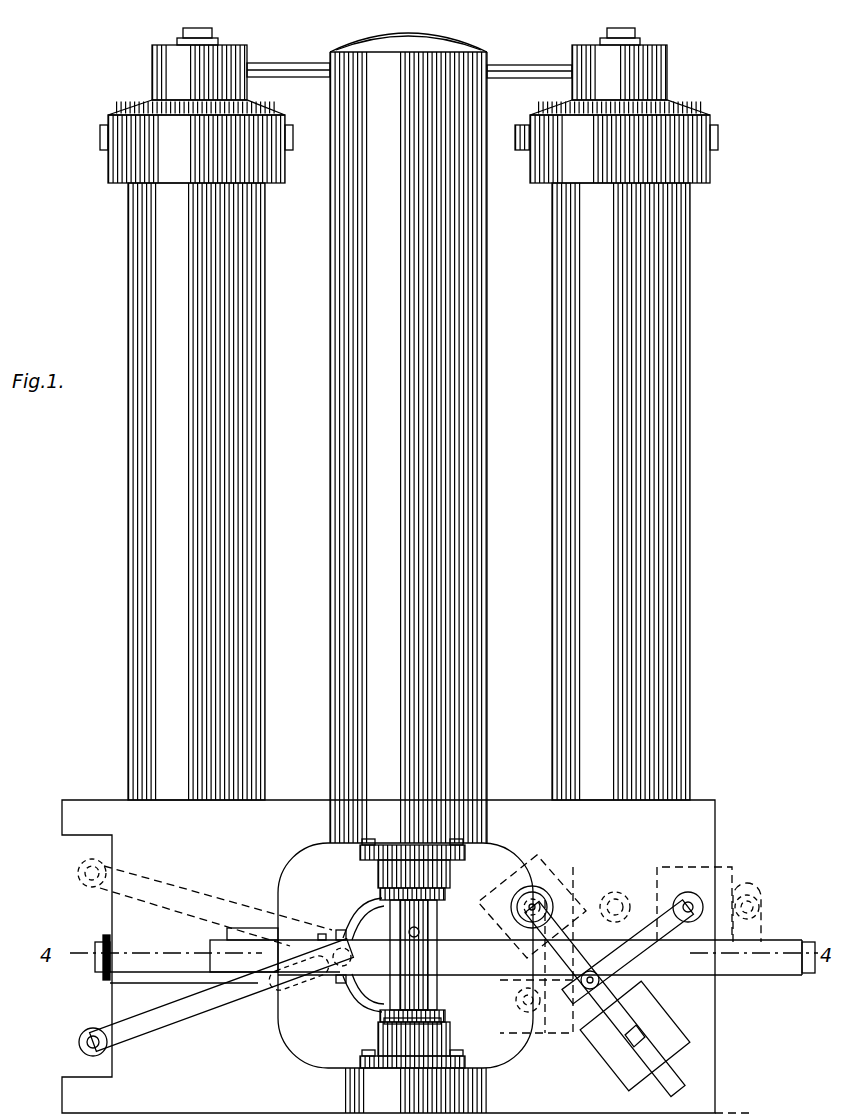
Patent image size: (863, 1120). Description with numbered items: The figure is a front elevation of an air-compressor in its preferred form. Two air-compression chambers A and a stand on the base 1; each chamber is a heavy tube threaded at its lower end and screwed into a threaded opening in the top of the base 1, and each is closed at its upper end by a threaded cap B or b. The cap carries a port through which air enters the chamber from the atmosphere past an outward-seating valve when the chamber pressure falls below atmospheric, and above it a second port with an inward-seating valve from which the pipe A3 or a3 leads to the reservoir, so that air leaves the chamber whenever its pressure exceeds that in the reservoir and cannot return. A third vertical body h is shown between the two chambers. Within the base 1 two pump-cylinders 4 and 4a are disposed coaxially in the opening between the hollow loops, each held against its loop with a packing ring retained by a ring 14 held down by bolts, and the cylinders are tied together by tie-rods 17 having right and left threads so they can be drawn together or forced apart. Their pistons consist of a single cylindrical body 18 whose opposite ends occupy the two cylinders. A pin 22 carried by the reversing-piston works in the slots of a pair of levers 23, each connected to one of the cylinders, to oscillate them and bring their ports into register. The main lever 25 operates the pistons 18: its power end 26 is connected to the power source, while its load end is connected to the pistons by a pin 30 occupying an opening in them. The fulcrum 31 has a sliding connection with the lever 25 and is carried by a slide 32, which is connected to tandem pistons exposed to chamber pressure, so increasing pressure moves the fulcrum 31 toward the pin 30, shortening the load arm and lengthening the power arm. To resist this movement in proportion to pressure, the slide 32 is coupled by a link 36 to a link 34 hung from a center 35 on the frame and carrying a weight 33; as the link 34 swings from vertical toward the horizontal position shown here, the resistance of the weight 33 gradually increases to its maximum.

The air-compression chamber a is at (196, 491).
The central cylinder h is at (410, 562).
The air-compression chamber A is at (621, 491).
The cap b is at (152, 92).
The cap B is at (667, 95).
The pipe a3 is at (292, 68).
The pipe A3 is at (530, 69).
The base 1 is at (388, 956).
The pump-cylinder 4 is at (440, 866).
The pump-cylinder 4a is at (440, 1030).
The ring 14 is at (362, 1063).
The tie-rods 17 is at (430, 908).
The piston 18 is at (428, 952).
The pin 22 is at (343, 923).
The levers 23 is at (362, 912).
The main lever 25 is at (215, 955).
The power end 26 is at (93, 1036).
The pin 30 is at (430, 930).
The fulcrum 31 is at (321, 934).
The slide 32 is at (625, 957).
The weight 33 is at (635, 1036).
The link 34 is at (605, 998).
The center 35 is at (532, 905).
The link 36 is at (632, 948).